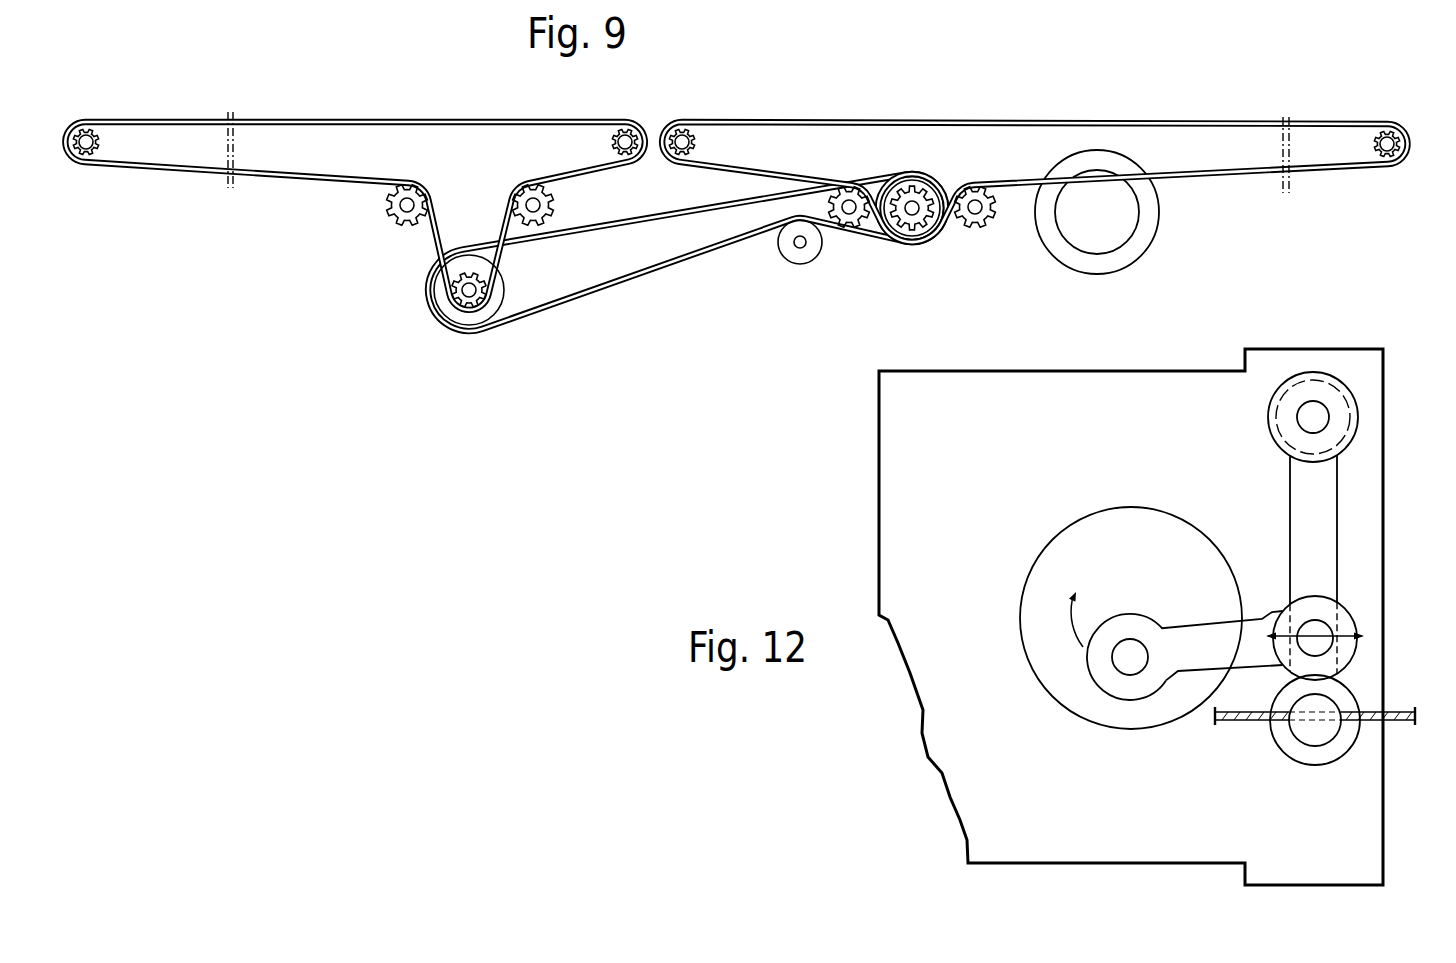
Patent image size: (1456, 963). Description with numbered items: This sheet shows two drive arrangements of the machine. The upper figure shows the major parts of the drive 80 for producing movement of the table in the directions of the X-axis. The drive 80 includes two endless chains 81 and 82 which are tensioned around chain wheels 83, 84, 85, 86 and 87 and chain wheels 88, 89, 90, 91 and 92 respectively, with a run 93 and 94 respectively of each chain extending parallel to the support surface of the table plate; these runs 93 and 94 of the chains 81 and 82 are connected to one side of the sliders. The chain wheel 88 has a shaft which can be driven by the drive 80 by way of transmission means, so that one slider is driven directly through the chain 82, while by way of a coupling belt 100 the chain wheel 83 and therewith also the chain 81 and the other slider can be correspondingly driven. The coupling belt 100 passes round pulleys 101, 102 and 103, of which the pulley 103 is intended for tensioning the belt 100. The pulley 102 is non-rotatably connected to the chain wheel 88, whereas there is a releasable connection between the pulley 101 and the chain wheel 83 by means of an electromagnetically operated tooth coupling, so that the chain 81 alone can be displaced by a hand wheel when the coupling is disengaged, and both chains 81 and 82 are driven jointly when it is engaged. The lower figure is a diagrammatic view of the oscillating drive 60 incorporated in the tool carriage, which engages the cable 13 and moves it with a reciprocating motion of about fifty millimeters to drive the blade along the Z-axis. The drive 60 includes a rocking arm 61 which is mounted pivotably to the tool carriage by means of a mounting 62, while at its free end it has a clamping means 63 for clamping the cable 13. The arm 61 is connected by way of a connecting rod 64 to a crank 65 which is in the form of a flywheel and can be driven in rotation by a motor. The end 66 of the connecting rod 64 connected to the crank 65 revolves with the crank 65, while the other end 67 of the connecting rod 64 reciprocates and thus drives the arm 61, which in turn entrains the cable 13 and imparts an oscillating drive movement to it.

In FIG. 12, the cable 13 is at (1250, 718).
In FIG. 12, the oscillating drive 60 is at (1162, 865).
In FIG. 12, the rocking arm 61 is at (1325, 555).
In FIG. 12, the mounting 62 is at (1320, 405).
In FIG. 12, the clamping means 63 is at (1323, 727).
In FIG. 12, the connecting rod 64 is at (1193, 658).
In FIG. 12, the crank 65 is at (1043, 668).
In FIG. 12, the end of the connecting rod 66 is at (1128, 667).
In FIG. 12, the other end of the connecting rod 67 is at (1320, 650).
In FIG. 9, the drive 80 is at (1146, 254).
In FIG. 9, the endless chain 81 is at (355, 183).
In FIG. 9, the endless chain 82 is at (1034, 179).
In FIG. 9, the chain wheel 83 is at (465, 300).
In FIG. 9, the chain wheel 84 is at (395, 215).
In FIG. 9, the chain wheel 85 is at (95, 130).
In FIG. 9, the chain wheel 86 is at (627, 128).
In FIG. 9, the chain wheel 87 is at (552, 206).
In FIG. 9, the chain wheel 88 is at (923, 220).
In FIG. 9, the chain wheel 89 is at (683, 128).
In FIG. 9, the chain wheel 90 is at (1388, 128).
In FIG. 9, the chain wheel 91 is at (975, 225).
In FIG. 9, the chain wheel 92 is at (852, 220).
In FIG. 9, the run 93 is at (318, 118).
In FIG. 9, the run 94 is at (1020, 118).
In FIG. 9, the coupling belt 100 is at (613, 283).
In FIG. 9, the pulley 101 is at (477, 317).
In FIG. 9, the pulley 102 is at (908, 240).
In FIG. 9, the pulley 103 is at (793, 253).